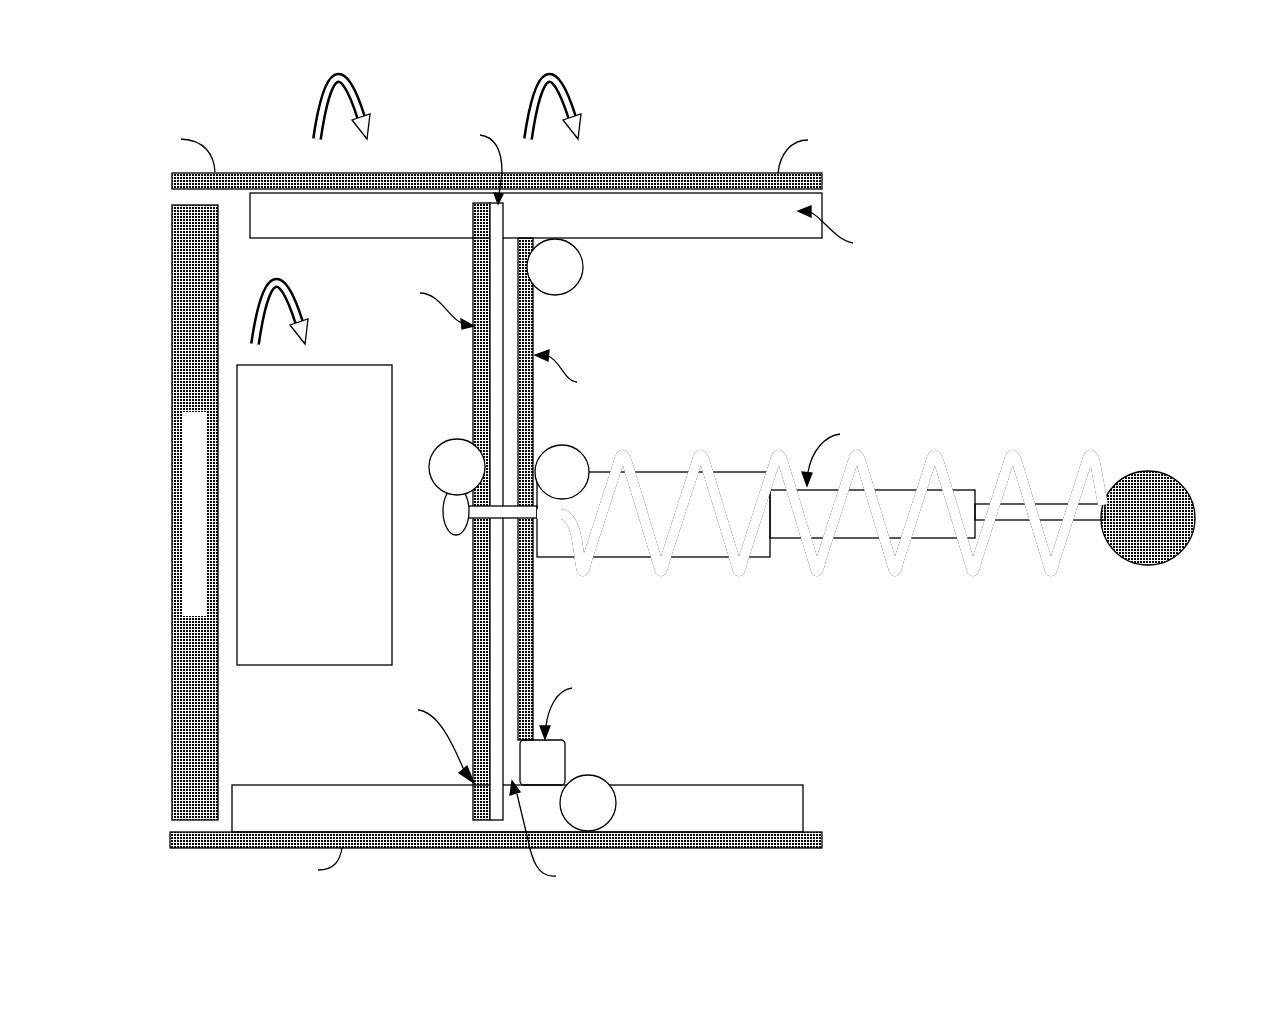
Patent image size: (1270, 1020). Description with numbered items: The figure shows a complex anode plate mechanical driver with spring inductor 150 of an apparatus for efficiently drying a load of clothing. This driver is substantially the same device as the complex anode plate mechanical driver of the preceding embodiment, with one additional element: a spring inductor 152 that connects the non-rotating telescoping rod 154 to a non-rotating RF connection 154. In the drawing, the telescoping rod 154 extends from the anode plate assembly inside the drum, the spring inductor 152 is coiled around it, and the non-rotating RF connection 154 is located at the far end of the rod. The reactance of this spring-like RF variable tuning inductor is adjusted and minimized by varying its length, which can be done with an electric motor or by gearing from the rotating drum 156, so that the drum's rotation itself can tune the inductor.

The complex anode plate mechanical driver with spring inductor 150 is at (676, 462).
The spring inductor 152 is at (891, 585).
The non-rotating telescoping rod / non-rotating RF connection 154 is at (686, 472).
The rotating drum 156 is at (310, 172).